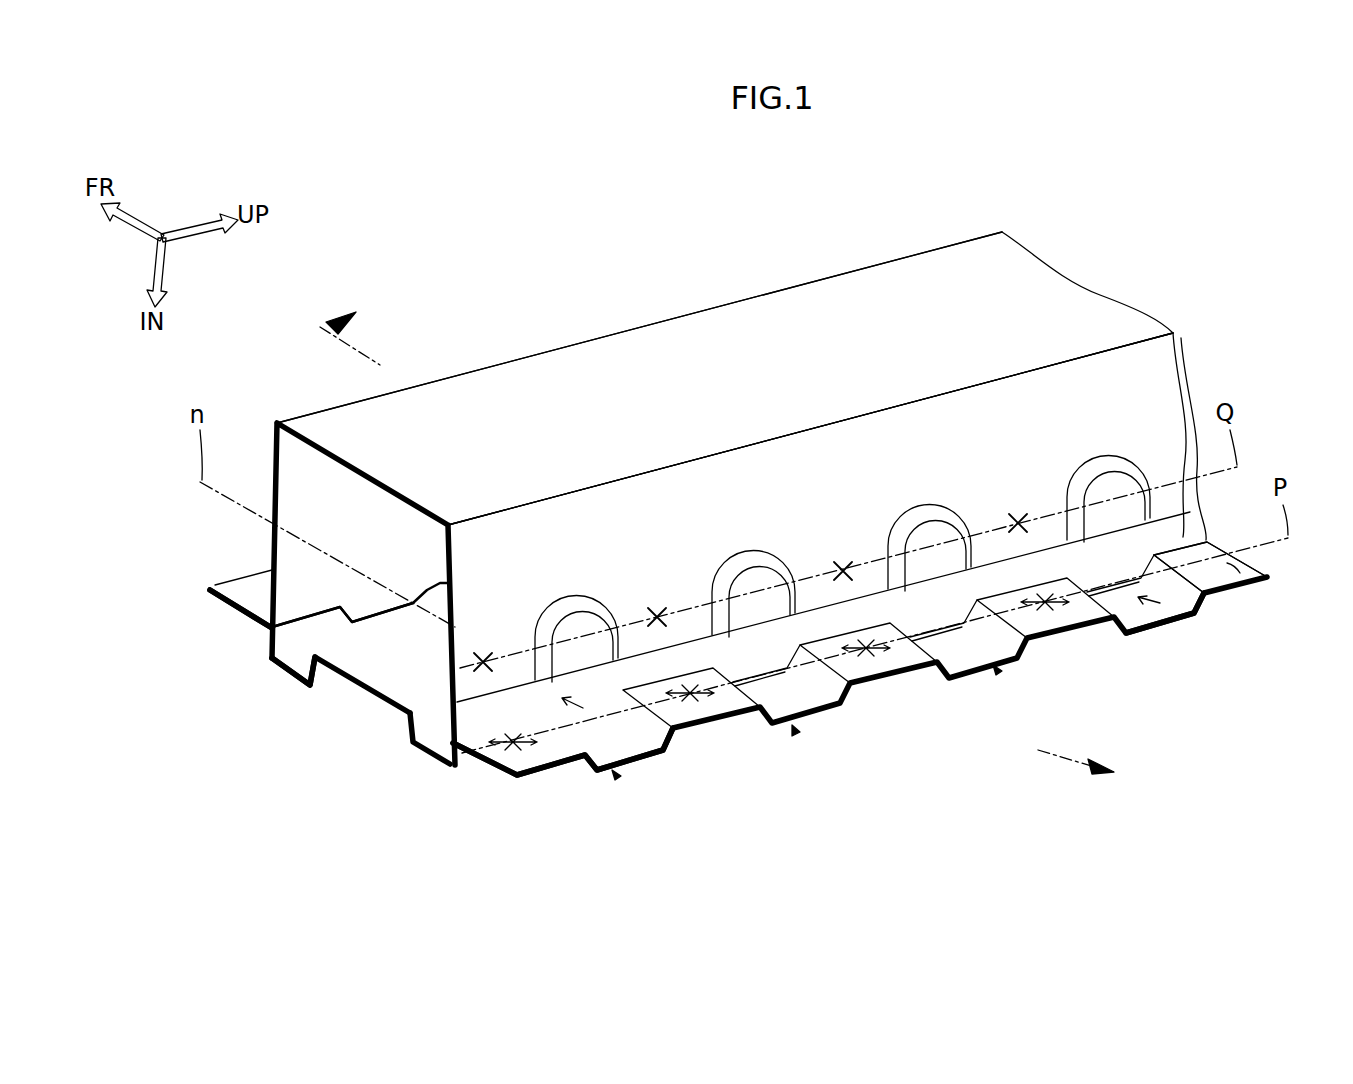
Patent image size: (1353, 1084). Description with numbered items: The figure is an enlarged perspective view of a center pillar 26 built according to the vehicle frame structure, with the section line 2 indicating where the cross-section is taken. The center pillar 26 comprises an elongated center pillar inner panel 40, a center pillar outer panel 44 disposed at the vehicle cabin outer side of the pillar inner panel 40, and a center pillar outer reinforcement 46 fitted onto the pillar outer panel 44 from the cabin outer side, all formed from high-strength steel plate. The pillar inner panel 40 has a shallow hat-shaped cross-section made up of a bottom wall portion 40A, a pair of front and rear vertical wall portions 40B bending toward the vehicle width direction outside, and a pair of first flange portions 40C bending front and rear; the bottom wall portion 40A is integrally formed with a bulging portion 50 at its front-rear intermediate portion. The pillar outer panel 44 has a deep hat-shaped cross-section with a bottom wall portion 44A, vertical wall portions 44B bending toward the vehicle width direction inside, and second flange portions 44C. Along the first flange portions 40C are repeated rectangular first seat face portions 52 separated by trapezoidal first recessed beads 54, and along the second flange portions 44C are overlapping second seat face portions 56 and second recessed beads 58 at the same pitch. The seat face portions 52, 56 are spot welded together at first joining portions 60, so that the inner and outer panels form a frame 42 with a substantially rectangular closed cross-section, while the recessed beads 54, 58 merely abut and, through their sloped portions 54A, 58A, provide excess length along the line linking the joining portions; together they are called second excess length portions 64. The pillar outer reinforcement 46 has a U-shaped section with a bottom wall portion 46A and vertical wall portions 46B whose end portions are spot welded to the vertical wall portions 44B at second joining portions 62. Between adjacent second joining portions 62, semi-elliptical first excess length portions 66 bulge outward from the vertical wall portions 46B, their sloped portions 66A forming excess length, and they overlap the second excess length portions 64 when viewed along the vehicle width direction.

The section line 2 is at (715, 530).
The center pillar 26 is at (744, 250).
The center pillar inner panel 40 is at (345, 690).
The bottom wall portion 40A is at (442, 766).
The vertical wall portions 40B is at (268, 660).
The first flange portions 40C is at (252, 628).
The frame 42 is at (268, 712).
The center pillar outer panel 44 is at (600, 722).
The bottom wall portion 44A is at (340, 477).
The vertical wall portions 44B is at (305, 688).
The second flange portions 44C is at (232, 598).
The center pillar outer reinforcement 46 is at (905, 250).
The bottom wall portion 46A is at (651, 350).
The vertical wall portions 46B is at (872, 442).
The bulging portion 50 is at (390, 700).
The first seat face portions 52 is at (722, 725).
The first recessed beads 54 is at (823, 722).
The sloped portions 54A is at (752, 722).
The second seat face portions 56 is at (1085, 603).
The second recessed beads 58 is at (1177, 600).
The sloped portions 58A is at (1153, 623).
The first joining portions 60 is at (520, 755).
The second joining portions 62 is at (655, 612).
The second excess length portions 64 is at (615, 773).
The first excess length portions 66 is at (586, 618).
The sloped portions 66A is at (560, 612).